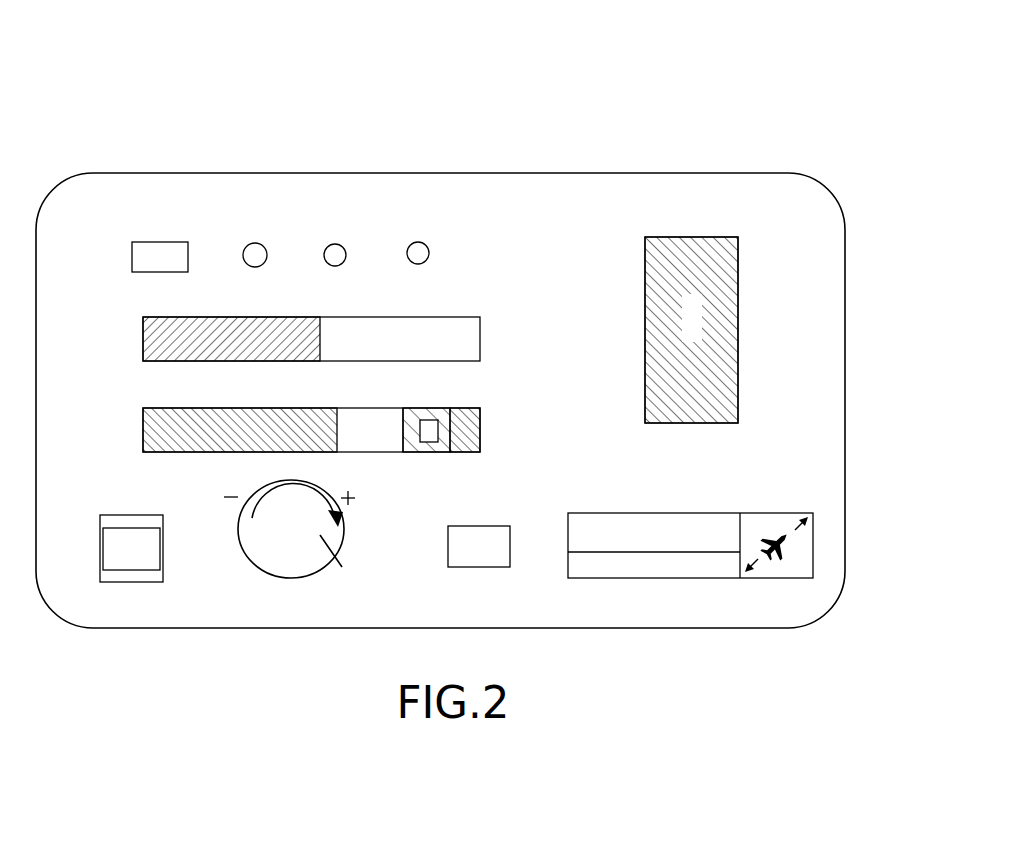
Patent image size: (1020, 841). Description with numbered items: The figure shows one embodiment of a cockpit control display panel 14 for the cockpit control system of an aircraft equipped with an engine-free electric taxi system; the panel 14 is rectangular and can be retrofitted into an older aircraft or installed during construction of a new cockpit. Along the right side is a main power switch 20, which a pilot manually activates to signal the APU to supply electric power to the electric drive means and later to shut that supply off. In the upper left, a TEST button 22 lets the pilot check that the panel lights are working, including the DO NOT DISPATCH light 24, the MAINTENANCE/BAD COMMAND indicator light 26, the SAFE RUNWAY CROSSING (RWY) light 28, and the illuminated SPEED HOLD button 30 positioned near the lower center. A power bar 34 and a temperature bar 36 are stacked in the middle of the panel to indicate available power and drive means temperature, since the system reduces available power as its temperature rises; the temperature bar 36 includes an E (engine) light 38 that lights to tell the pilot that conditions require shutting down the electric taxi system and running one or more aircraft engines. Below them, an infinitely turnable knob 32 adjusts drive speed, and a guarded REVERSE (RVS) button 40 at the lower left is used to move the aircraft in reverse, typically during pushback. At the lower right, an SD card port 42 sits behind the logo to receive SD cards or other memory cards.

The cockpit control display panel 14 is at (598, 118).
The main power switch 20 is at (723, 341).
The TEST button 22 is at (158, 242).
The DO NOT DISPATCH light 24 is at (250, 258).
The MAINTENANCE/BAD COMMAND indicator light 26 is at (336, 256).
The SAFE RUNWAY CROSSING (RWY) light 28 is at (418, 250).
The SPEED HOLD button 30 is at (480, 557).
The knob 32 is at (342, 567).
The power bar 34 is at (143, 336).
The temperature bar 36 is at (143, 429).
The E (engine) light 38 is at (442, 415).
The REVERSE (RVS) button 40 is at (132, 582).
The SD card port 42 is at (732, 527).